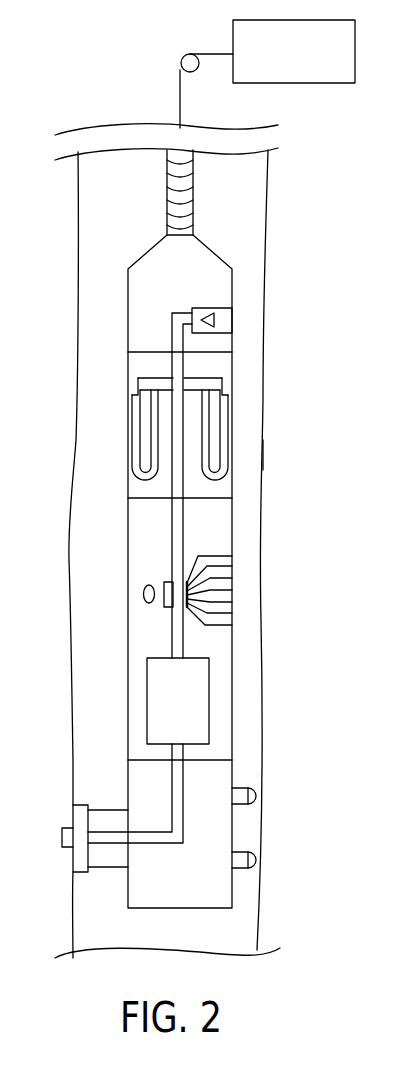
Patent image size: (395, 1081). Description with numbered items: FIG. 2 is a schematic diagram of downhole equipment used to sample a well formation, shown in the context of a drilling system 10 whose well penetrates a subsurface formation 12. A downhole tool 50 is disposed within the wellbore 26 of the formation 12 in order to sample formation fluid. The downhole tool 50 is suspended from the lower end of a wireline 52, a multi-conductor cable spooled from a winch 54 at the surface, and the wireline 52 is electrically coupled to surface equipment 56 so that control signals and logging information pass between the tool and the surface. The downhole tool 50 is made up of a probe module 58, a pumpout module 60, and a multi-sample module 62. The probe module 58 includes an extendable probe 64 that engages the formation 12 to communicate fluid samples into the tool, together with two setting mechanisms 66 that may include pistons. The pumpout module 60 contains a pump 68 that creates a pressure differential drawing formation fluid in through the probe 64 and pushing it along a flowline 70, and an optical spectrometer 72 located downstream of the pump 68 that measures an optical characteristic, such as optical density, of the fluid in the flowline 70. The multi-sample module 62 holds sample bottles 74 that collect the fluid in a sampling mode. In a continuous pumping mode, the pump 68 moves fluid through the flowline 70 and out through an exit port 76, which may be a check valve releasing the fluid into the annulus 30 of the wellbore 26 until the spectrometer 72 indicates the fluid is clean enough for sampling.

The drilling system 10 is at (85, 94).
The subsurface formation 12 is at (306, 333).
The wellbore 26 is at (265, 463).
The annulus 30 is at (250, 507).
The downhole tool 50 is at (94, 525).
The wireline 52 is at (165, 193).
The winch 54 is at (197, 72).
The surface equipment 56 is at (293, 84).
The probe module 58 is at (128, 784).
The pumpout module 60 is at (128, 693).
The multi-sample module 62 is at (128, 483).
The probe 64 is at (88, 805).
The setting mechanisms 66 is at (263, 796).
The pump 68 is at (189, 720).
The flowline 70 is at (184, 545).
The optical spectrometer 72 is at (238, 592).
The sample bottles 74 is at (132, 430).
The exit port 76 is at (233, 320).